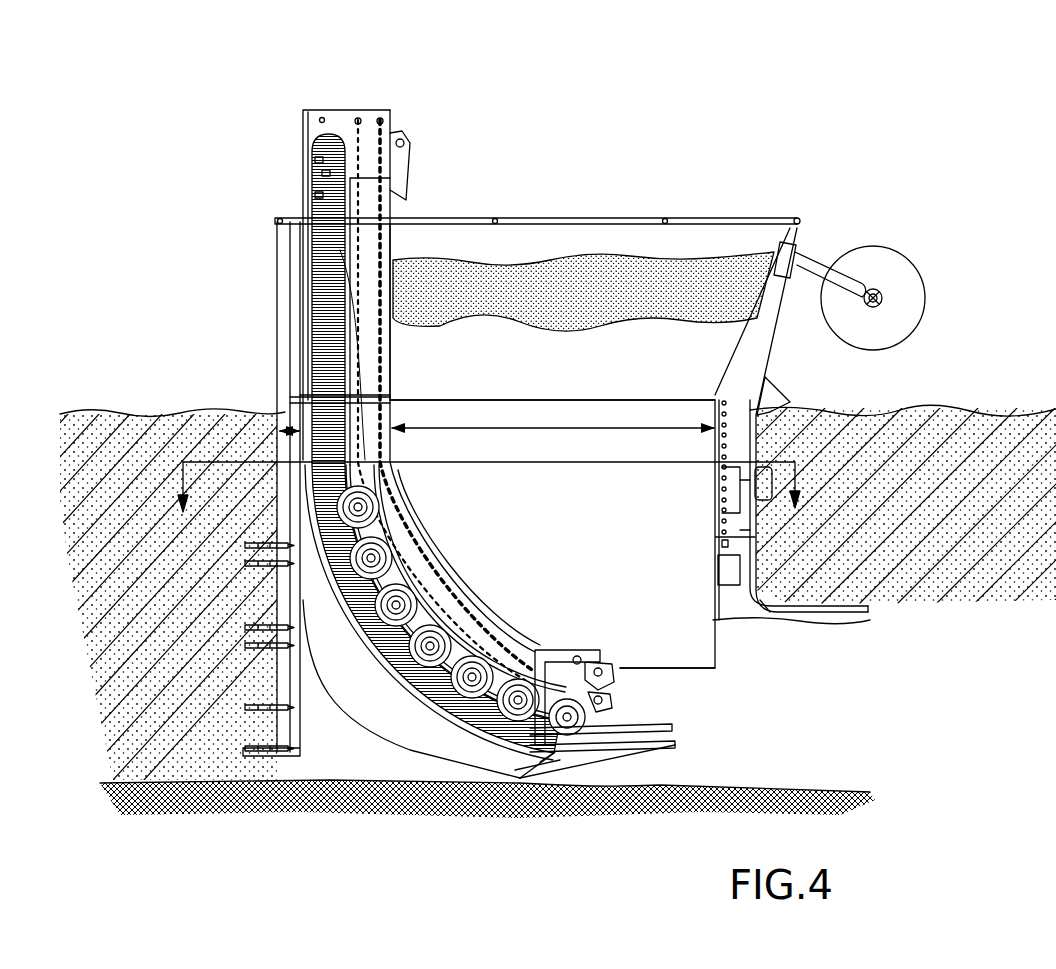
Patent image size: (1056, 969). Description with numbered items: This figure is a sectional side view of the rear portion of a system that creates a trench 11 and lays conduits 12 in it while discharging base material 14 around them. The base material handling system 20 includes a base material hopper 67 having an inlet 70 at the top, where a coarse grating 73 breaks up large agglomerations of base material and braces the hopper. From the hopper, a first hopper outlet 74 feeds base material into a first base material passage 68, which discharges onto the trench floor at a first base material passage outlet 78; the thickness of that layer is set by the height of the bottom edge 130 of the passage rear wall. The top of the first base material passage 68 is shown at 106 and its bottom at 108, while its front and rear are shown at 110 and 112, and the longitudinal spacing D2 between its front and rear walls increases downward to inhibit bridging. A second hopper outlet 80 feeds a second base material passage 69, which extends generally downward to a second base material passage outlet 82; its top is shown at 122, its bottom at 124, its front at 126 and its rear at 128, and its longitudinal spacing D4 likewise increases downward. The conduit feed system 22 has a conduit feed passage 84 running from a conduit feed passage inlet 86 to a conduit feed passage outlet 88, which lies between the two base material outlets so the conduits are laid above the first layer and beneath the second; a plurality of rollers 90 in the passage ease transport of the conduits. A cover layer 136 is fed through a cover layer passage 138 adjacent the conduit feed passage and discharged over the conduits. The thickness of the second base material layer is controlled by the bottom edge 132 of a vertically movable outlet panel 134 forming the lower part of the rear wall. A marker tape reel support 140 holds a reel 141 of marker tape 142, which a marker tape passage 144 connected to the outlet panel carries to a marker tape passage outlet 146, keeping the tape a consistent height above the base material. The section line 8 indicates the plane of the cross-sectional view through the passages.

The section line 8- 8 is at (490, 499).
The trench 11 is at (1012, 440).
The conduits 12 is at (318, 160).
The base material 14 is at (430, 258).
The base material handling system 20 is at (671, 150).
The conduit feed system 22 is at (410, 107).
The base material hopper 67 is at (540, 254).
The first base material passage 68 is at (298, 603).
The second base material passage 69 is at (600, 500).
The inlet 70 is at (668, 222).
The coarse grating 73 is at (493, 222).
The first hopper outlet 74 is at (290, 400).
The first base material passage outlet 78 is at (405, 763).
The second hopper outlet 80 is at (600, 402).
The second base material passage outlet 82 is at (702, 668).
The conduit feed passage 84 is at (347, 248).
The conduit feed passage inlet 86 is at (340, 110).
The conduit feed passage outlet 88 is at (563, 752).
The rollers 90 is at (398, 603).
The top of the first base material passage 106 is at (290, 400).
The bottom of the first base material passage 108 is at (338, 760).
The front of the first base material passage 110 is at (275, 517).
The rear of the first base material passage 112 is at (543, 760).
The top of the second base material passage 122 is at (487, 402).
The bottom of the second base material passage 124 is at (688, 680).
The front of the second base material passage 126 is at (392, 410).
The rear of the second base material passage 128 is at (757, 548).
The bottom edge of the rear wall 130 is at (540, 762).
The bottom edge of the outlet panel 132 is at (718, 620).
The outlet panel 134 is at (757, 598).
The cover layer 136 is at (615, 660).
The cover layer passage 138 is at (368, 305).
The marker tape reel support 140 is at (905, 272).
The reel 141 is at (883, 326).
The marker tape 142 is at (797, 348).
The marker tape passage 144 is at (757, 530).
The marker tape passage outlet 146 is at (860, 610).
The longitudinal spacing of the first base material passage D2 is at (290, 407).
The longitudinal spacing of the second base material passage D4 is at (553, 418).